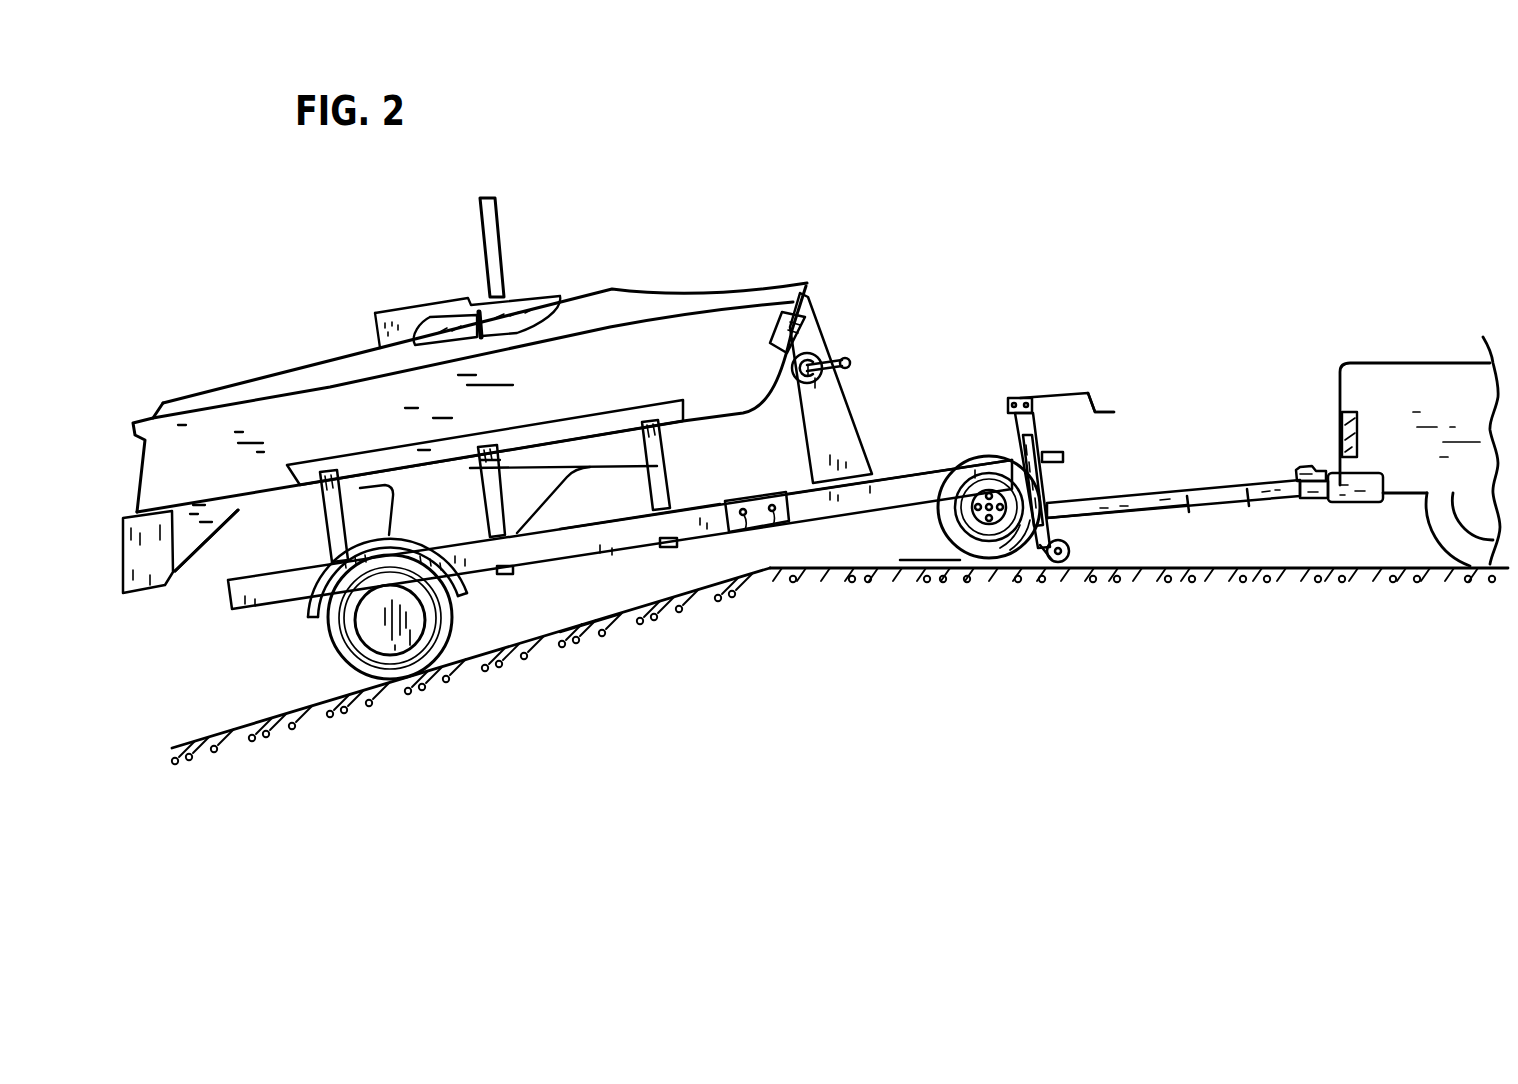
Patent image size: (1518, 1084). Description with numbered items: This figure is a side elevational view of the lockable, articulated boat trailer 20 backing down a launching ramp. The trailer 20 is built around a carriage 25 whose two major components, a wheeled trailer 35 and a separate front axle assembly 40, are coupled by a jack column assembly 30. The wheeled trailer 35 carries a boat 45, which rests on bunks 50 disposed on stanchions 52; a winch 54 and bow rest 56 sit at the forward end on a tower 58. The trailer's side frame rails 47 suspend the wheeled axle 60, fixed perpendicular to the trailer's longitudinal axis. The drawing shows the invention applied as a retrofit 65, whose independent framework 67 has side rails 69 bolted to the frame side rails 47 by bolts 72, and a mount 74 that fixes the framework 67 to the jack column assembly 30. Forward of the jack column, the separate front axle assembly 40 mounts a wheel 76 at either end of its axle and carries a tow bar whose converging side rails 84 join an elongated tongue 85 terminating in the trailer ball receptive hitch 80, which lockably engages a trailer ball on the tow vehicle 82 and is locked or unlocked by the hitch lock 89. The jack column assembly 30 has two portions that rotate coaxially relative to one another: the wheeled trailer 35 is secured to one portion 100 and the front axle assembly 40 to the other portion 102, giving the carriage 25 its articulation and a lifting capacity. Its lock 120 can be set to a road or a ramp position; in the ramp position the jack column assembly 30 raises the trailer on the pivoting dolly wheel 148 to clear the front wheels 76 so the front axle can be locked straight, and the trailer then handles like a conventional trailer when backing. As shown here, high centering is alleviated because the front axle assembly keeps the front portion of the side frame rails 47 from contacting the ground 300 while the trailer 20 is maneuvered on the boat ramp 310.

The lockable, articulated boat trailer 20 is at (1110, 641).
The carriage 25 is at (982, 428).
The jack column assembly 30 is at (1040, 388).
The wheeled trailer 35 is at (620, 572).
The separate front axle assembly 40 is at (1153, 440).
The boat 45 is at (672, 245).
The side frame rails 47 is at (303, 590).
The bunks 50 is at (293, 496).
The stanchions 52 is at (310, 493).
The winch 54 is at (813, 367).
The bow rest 56 is at (788, 305).
The tower 58 is at (823, 407).
The wheeled axle 60 is at (518, 607).
The retrofit 65 is at (1107, 503).
The framework 67 is at (910, 449).
The side rails 69 is at (868, 497).
The bolts 72 is at (775, 522).
The mount 74 is at (1003, 447).
The wheel 76 is at (963, 538).
The trailer ball receptive hitch 80 is at (1297, 442).
The tow vehicle 82 is at (1406, 360).
The converging side rails 84 is at (1123, 512).
The tongue 85 is at (1250, 483).
The hitch lock 89 is at (1297, 467).
The portion 100 is at (1055, 450).
The portion 102 is at (1045, 432).
The lock 120 is at (1055, 468).
The dolly wheel 148 is at (1057, 557).
The ground 300 is at (771, 593).
The boat ramp 310 is at (670, 687).